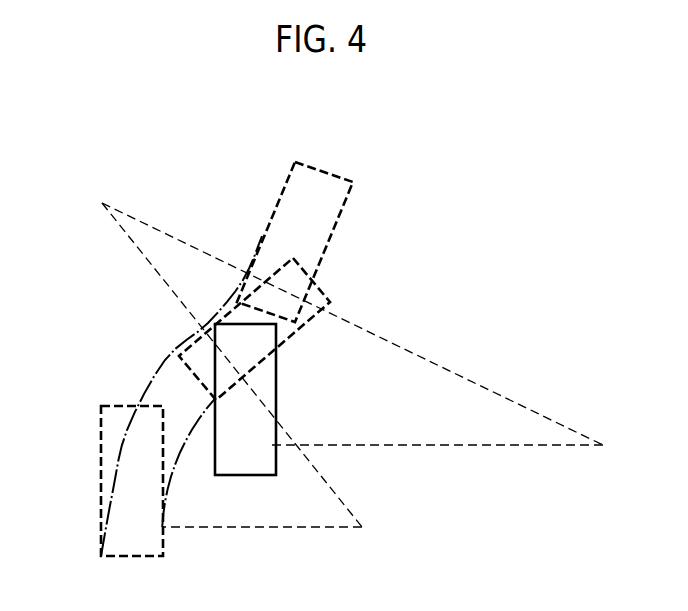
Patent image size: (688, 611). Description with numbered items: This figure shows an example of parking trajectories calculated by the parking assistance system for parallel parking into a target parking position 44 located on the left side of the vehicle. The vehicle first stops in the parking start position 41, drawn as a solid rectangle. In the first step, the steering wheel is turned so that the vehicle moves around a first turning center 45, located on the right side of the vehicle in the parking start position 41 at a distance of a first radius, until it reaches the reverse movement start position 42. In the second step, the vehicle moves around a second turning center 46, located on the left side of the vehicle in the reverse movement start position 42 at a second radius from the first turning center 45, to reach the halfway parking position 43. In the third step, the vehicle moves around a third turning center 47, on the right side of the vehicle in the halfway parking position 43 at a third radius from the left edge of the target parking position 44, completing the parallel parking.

The parking start position 41 is at (239, 476).
The reverse movement start position 42 is at (339, 232).
The halfway parking position 43 is at (318, 325).
The target parking position 44 is at (98, 472).
The first turning center 45 is at (603, 445).
The second turning center 46 is at (102, 203).
The third turning center 47 is at (313, 525).